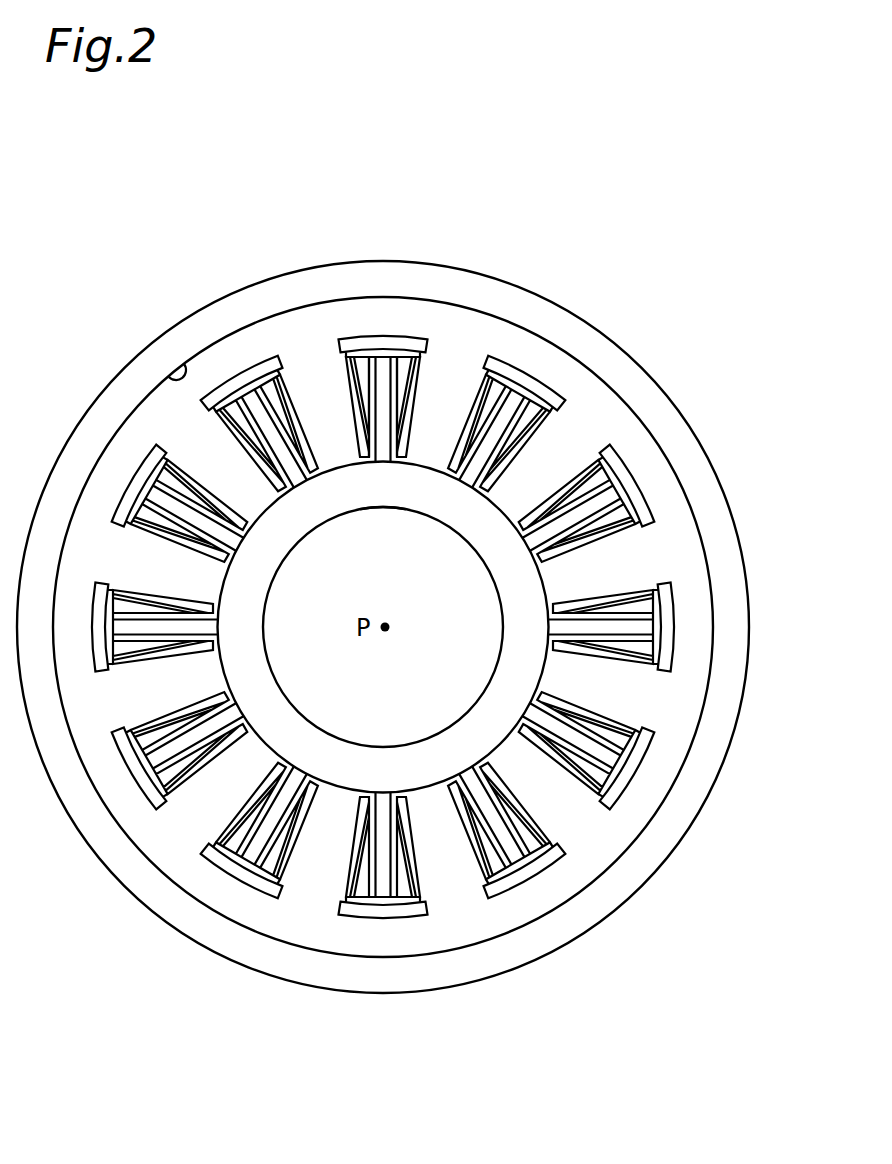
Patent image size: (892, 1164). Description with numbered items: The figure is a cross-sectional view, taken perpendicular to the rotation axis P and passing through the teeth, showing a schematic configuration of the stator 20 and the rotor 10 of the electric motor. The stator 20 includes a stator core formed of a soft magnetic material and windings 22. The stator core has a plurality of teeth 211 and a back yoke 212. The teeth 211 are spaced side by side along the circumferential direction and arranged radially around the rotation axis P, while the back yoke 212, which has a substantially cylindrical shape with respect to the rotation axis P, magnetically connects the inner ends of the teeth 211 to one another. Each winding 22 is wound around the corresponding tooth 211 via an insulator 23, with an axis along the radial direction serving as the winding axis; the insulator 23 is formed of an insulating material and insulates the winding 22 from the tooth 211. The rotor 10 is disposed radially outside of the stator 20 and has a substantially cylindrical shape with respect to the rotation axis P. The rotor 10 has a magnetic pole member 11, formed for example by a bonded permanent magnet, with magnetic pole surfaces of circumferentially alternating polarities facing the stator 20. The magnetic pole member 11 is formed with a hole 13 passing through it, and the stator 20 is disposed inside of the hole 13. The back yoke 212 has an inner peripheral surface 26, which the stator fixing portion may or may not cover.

The rotor 10 is at (507, 274).
The magnetic pole member 11 is at (244, 302).
The hole 13 is at (167, 382).
The stator 20 is at (383, 561).
The teeth 211 is at (388, 345).
The back yoke 212 is at (388, 506).
The winding 22 is at (410, 372).
The insulator 23 is at (350, 344).
The inner peripheral surface 26 is at (283, 563).